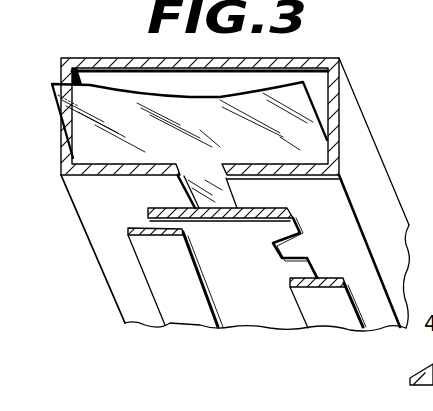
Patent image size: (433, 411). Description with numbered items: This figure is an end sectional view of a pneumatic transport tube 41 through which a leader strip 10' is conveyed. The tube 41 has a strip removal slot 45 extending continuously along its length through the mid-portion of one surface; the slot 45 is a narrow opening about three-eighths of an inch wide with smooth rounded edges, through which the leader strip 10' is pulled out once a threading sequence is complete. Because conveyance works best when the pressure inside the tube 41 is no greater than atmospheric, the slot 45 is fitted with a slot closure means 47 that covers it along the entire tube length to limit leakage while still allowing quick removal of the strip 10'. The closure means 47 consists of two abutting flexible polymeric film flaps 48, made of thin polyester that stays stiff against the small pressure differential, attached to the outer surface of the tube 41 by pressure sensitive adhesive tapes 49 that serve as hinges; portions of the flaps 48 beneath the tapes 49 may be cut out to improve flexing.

The leader strip 10' is at (183, 109).
The transport tube 41 is at (350, 107).
The strip removal slot 45 is at (193, 183).
The slot closure means 47 is at (236, 321).
The flexible polymeric film flaps 48 is at (277, 229).
The pressure sensitive adhesive tapes 49 is at (157, 275).